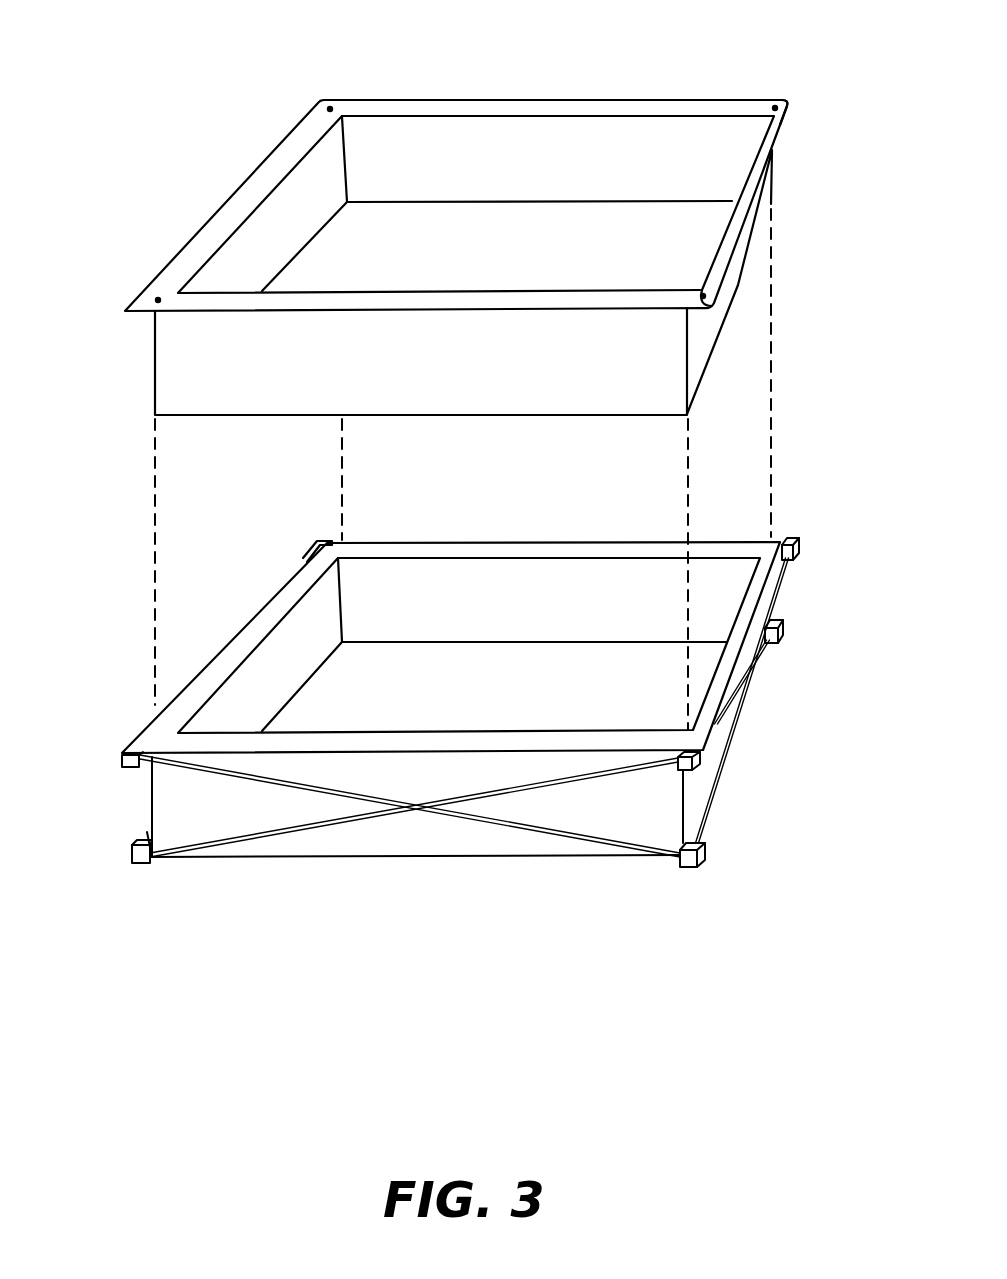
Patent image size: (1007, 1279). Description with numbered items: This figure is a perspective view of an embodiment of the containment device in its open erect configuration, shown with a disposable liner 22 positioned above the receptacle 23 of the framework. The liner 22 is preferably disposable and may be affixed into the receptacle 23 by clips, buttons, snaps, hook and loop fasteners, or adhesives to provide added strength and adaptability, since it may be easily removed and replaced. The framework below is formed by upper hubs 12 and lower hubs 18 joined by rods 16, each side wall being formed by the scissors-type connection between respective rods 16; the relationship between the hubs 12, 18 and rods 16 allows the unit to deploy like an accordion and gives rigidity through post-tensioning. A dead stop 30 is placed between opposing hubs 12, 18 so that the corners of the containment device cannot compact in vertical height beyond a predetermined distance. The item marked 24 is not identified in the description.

The hub 12 is at (124, 761).
The rod 16 is at (257, 831).
The hub 18 is at (140, 863).
The liner 22 is at (363, 223).
The receptacle 23 is at (335, 700).
The rim corner 24 is at (780, 100).
The dead stop 30 is at (757, 764).